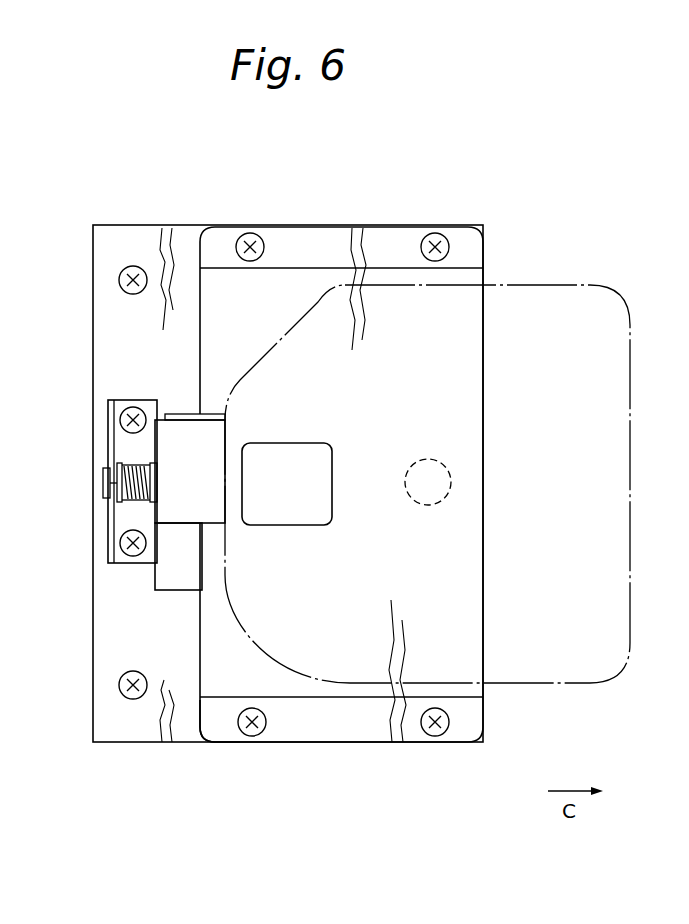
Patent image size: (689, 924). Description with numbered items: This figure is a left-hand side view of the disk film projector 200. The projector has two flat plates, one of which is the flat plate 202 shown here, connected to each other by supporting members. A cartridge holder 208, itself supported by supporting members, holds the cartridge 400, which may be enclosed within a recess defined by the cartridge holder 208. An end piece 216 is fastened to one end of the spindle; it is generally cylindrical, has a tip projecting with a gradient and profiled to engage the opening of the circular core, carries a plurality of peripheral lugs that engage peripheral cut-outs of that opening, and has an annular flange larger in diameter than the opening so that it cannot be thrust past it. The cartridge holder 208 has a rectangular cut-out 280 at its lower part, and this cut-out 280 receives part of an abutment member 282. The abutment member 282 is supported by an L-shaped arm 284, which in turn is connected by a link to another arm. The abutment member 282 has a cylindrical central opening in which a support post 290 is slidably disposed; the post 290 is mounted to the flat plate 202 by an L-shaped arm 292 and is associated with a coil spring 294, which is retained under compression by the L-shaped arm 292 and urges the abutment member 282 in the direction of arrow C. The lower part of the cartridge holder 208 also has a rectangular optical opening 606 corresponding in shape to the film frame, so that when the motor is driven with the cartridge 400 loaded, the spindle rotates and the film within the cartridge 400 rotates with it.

The disk film projector 200 is at (296, 166).
The flat plate 202 is at (148, 225).
The cartridge holder 208 is at (222, 688).
The end piece 216 is at (452, 482).
The rectangular cut-out 280 is at (207, 440).
The abutment member 282 is at (172, 427).
The L-shaped arm 284 is at (168, 590).
The support post 290 is at (103, 483).
The L-shaped arm 292 is at (108, 545).
The coil spring 294 is at (147, 500).
The cartridge 400 is at (545, 285).
The rectangular optical opening 606 is at (297, 458).